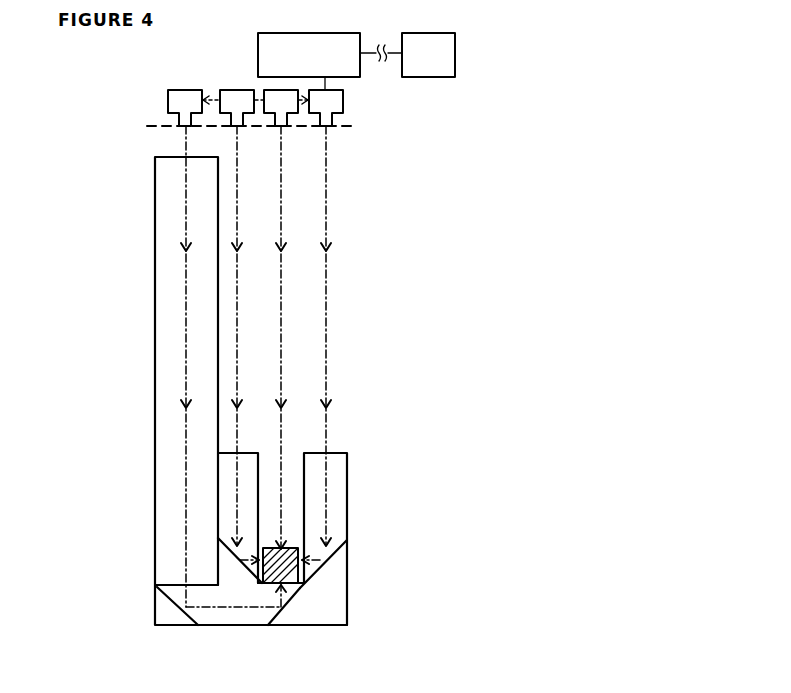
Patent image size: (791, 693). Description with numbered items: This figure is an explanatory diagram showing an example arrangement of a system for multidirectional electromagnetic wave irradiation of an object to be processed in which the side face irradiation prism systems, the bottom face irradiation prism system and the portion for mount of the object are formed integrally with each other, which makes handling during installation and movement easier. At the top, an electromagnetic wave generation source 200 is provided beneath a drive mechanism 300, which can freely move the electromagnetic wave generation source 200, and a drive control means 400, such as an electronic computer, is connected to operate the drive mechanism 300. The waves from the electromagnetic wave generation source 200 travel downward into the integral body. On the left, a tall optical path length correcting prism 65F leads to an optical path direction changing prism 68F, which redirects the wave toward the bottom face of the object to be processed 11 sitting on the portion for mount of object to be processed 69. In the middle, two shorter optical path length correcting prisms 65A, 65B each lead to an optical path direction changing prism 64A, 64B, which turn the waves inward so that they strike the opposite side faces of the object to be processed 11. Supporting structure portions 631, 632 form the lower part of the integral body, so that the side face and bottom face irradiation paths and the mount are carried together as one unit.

The drive mechanism 300 is at (330, 66).
The drive control means 400 is at (448, 66).
The electromagnetic wave generation source 200 is at (343, 100).
The optical path length correcting prism 65F is at (155, 288).
The optical path length correcting prism 65A is at (228, 453).
The optical path length correcting prism 65B is at (335, 453).
The optical path direction changing prism 64A is at (227, 530).
The optical path direction changing prism 64B is at (337, 530).
The object to be processed 11 is at (290, 548).
The portion for mount of object to be processed 69 is at (305, 578).
The supporting structure portion 631 is at (160, 590).
The supporting structure portion 632 is at (347, 587).
The optical path direction changing prism 68F is at (232, 626).